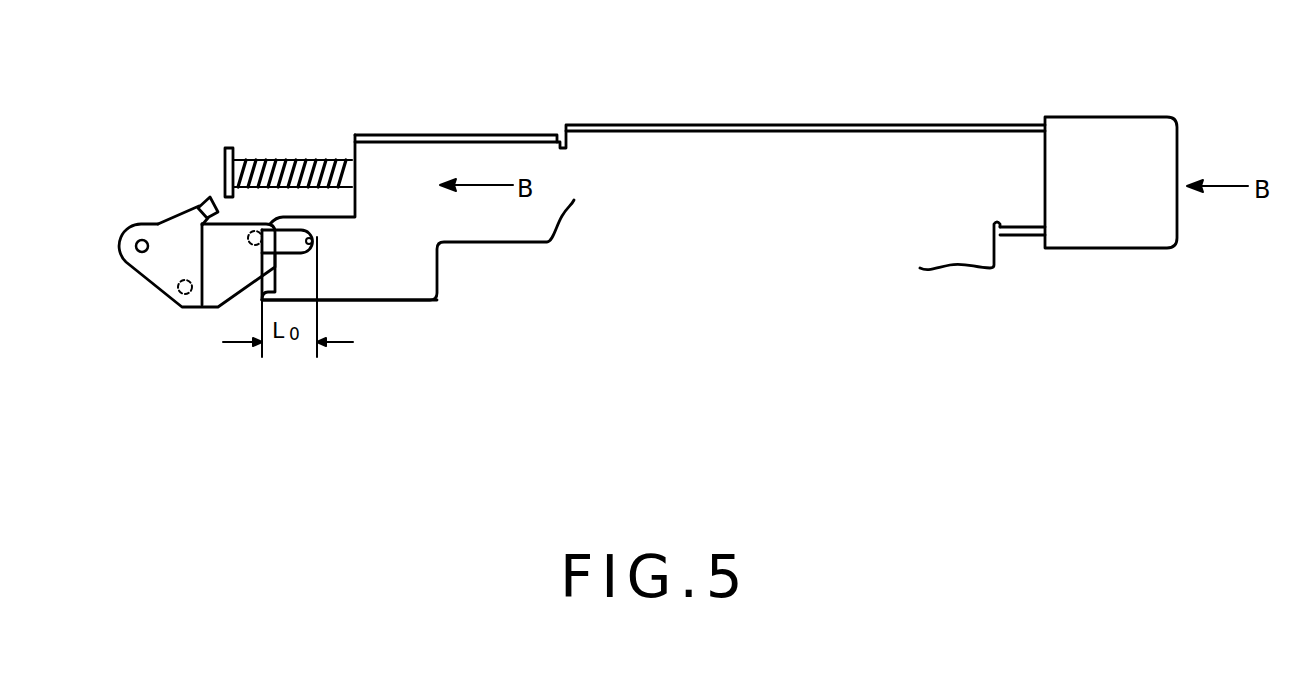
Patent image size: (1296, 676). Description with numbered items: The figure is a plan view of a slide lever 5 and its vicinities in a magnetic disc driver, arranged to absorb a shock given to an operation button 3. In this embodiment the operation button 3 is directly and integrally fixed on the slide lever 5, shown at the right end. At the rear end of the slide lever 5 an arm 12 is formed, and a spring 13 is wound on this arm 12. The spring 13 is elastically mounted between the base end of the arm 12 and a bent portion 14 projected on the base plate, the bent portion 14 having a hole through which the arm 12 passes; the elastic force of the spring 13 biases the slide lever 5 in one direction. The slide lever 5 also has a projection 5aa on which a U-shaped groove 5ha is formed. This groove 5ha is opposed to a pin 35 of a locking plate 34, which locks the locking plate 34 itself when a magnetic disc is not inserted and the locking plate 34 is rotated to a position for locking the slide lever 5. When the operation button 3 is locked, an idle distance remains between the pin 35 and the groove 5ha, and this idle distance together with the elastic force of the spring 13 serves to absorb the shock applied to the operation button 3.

The operation button 3 is at (1093, 238).
The slide lever 5 is at (837, 147).
The U-shaped groove 5ha is at (313, 236).
The projection 5aa is at (302, 278).
The arm 12 is at (280, 163).
The spring 13 is at (318, 163).
The bent portion 14 is at (228, 147).
The locking plate 34 is at (163, 263).
The pin 35 is at (255, 238).